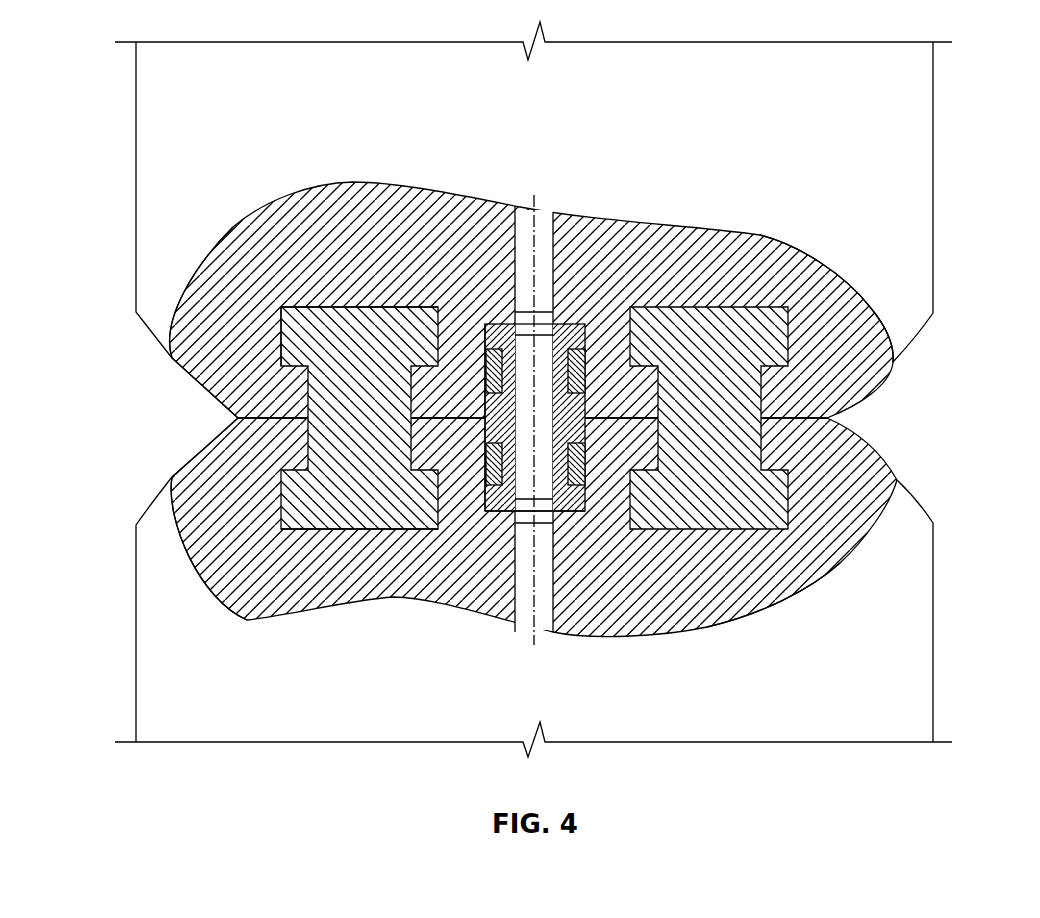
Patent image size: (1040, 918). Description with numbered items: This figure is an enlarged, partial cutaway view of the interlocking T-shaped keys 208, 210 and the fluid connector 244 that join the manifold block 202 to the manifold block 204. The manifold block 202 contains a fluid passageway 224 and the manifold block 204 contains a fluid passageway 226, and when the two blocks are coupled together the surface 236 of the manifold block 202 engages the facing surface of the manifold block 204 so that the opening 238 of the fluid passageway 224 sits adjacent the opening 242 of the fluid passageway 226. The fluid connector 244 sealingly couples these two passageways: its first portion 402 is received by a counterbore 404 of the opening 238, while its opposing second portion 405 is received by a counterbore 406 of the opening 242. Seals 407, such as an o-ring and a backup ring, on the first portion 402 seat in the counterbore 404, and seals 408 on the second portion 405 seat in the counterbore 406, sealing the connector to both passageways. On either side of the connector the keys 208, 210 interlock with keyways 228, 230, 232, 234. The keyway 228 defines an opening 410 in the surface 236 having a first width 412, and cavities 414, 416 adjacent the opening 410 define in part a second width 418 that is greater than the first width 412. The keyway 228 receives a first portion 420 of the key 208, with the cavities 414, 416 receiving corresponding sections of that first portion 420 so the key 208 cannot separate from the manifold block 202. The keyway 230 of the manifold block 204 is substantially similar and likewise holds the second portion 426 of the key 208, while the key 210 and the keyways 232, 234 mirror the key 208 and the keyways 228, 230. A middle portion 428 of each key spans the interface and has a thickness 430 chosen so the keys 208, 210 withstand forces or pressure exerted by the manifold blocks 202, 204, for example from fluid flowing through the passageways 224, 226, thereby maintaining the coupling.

The manifold block 202 is at (136, 172).
The manifold block 204 is at (136, 633).
The interlocking key 208 is at (370, 322).
The interlocking key 210 is at (765, 283).
The fluid passageway 224 is at (538, 225).
The fluid passageway 226 is at (526, 615).
The keyway 228 is at (307, 278).
The keyway 230 is at (283, 558).
The keyway 232 is at (737, 347).
The keyway 234 is at (742, 534).
The surface 236 is at (813, 402).
The opening 238 is at (546, 395).
The opening 242 is at (543, 472).
The fluid connector 244 is at (505, 340).
The first portion 402 is at (503, 332).
The counterbore 404 is at (488, 230).
The second portion 405 is at (506, 500).
The counterbore 406 is at (497, 500).
The seals 407 is at (578, 350).
The seals 408 is at (495, 465).
The opening 410 is at (350, 436).
The first width 412 is at (408, 406).
The cavity 414 is at (318, 322).
The cavity 416 is at (417, 322).
The second width 418 is at (435, 340).
The first portion 420 is at (330, 318).
The second portion 426 is at (370, 513).
The middle portion 428 is at (810, 322).
The thickness 430 is at (758, 398).